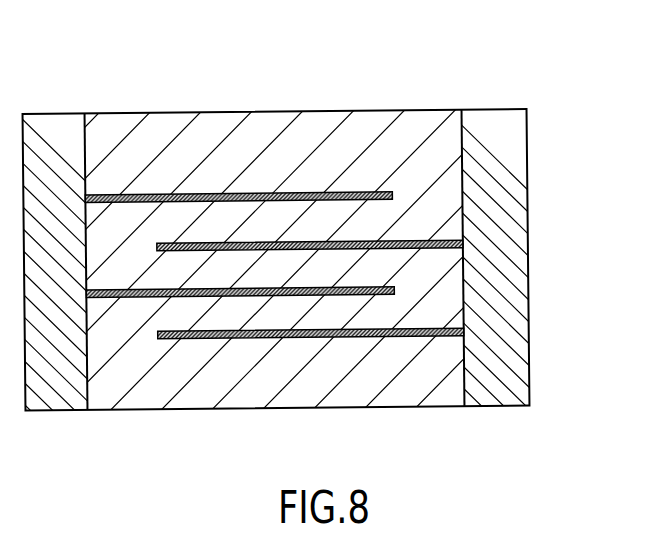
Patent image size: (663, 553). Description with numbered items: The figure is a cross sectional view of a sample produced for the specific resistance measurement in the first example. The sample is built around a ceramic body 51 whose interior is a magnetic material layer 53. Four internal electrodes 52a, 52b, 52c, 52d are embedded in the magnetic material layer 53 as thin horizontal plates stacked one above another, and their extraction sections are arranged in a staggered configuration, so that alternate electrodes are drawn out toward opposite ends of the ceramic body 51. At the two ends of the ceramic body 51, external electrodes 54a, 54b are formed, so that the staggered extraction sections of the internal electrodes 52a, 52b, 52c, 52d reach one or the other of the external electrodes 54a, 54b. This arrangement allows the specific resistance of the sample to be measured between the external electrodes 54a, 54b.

The ceramic body 51 is at (281, 111).
The magnetic material layer 53 is at (393, 133).
The external electrode 54a is at (44, 113).
The external electrode 54b is at (487, 110).
The internal electrode 52a is at (383, 193).
The internal electrode 52b is at (440, 243).
The internal electrode 52c is at (375, 287).
The internal electrode 52d is at (415, 330).